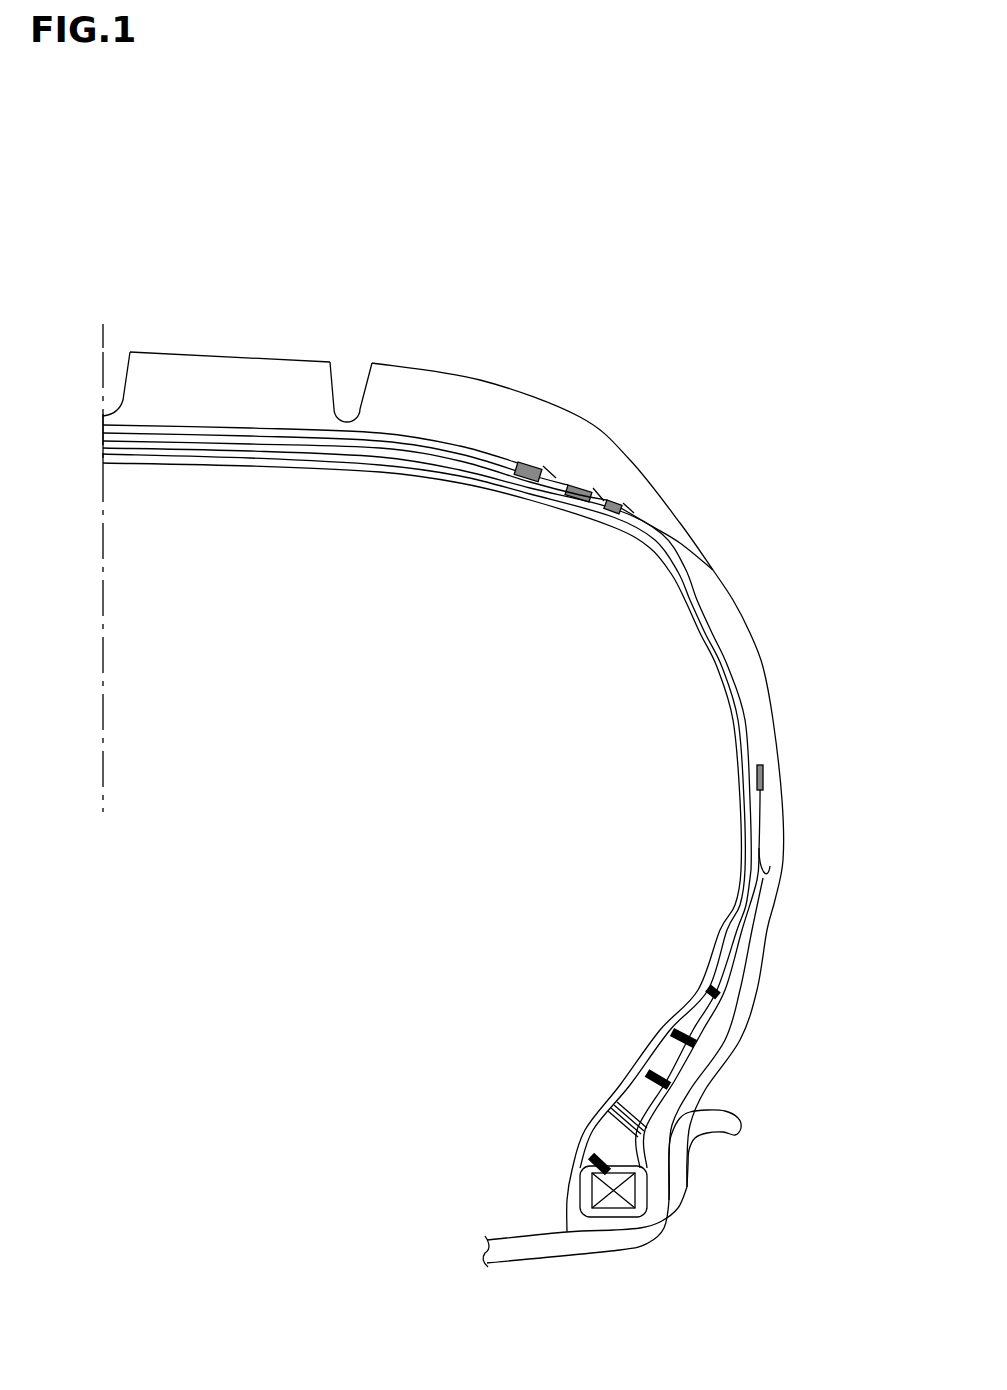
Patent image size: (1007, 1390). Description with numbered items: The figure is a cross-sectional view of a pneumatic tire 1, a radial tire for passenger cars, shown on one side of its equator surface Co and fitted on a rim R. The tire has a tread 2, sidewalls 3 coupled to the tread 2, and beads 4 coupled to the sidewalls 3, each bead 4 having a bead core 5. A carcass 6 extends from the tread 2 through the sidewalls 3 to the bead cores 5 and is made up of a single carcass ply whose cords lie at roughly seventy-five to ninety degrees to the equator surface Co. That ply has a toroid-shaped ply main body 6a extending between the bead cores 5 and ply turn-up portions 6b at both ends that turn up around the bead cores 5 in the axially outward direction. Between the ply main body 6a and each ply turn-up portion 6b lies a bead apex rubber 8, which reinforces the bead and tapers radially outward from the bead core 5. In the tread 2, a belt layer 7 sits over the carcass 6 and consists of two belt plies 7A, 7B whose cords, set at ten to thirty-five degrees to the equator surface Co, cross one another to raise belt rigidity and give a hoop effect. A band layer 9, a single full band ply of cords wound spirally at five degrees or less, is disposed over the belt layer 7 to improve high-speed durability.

The pneumatic tire 1 is at (727, 378).
The tread 2 is at (425, 396).
The sidewalls 3 is at (750, 605).
The beads 4 is at (555, 1143).
The bead core 5 is at (608, 1200).
The carcass 6 is at (556, 757).
The ply main body 6a is at (737, 700).
The ply turn-up portions 6b is at (760, 878).
The belt layer 7 is at (373, 598).
The belt ply 7A is at (372, 452).
The belt ply 7B is at (290, 440).
The bead apex rubber 8 is at (643, 1100).
The band layer 9 is at (228, 432).
The rim R is at (688, 1175).
The equator surface Co is at (104, 550).